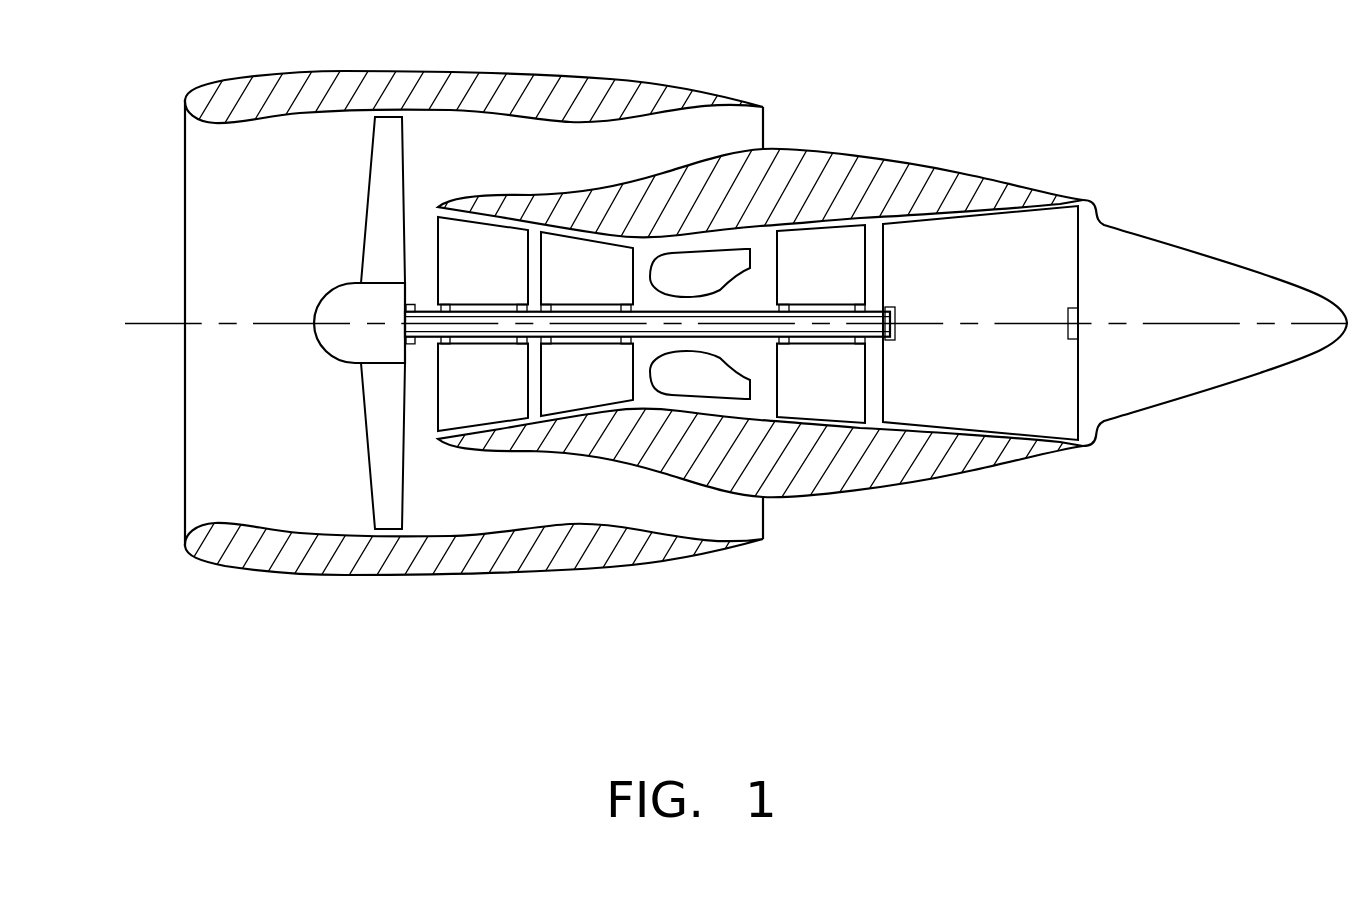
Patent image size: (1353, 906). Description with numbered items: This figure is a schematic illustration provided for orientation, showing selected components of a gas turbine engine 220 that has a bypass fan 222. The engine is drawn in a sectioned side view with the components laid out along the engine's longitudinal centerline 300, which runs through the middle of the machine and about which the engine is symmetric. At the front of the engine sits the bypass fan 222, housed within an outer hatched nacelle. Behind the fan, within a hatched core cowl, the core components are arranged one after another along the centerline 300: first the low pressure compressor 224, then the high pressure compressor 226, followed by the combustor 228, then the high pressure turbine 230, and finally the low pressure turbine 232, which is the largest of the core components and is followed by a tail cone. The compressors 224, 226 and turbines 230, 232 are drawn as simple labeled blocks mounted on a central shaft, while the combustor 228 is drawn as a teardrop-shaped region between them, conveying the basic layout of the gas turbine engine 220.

The gas turbine engine 220 is at (866, 79).
The bypass fan 222 is at (385, 447).
The low pressure compressor 224 is at (510, 282).
The high pressure compressor 226 is at (558, 282).
The combustor 228 is at (663, 287).
The high pressure turbine 230 is at (797, 280).
The low pressure turbine 232 is at (957, 271).
The engine centerline axis 300 is at (177, 323).